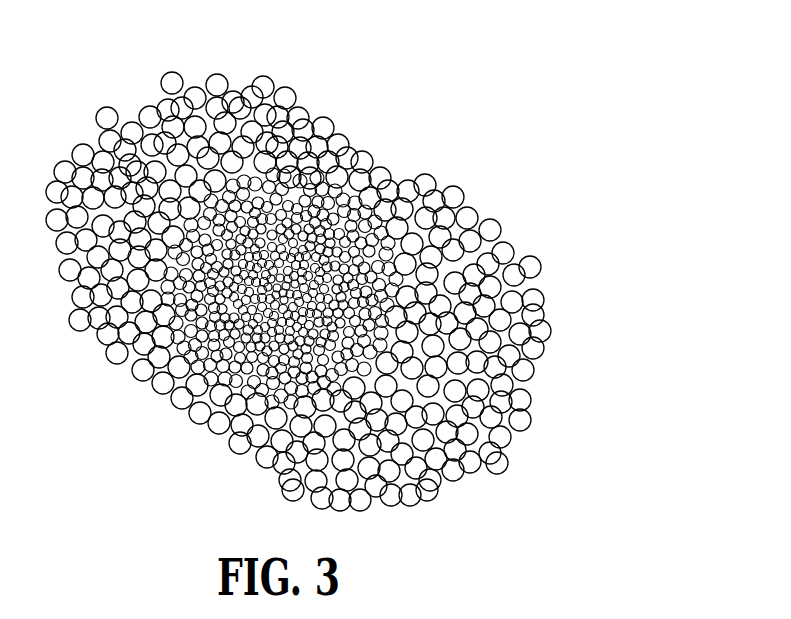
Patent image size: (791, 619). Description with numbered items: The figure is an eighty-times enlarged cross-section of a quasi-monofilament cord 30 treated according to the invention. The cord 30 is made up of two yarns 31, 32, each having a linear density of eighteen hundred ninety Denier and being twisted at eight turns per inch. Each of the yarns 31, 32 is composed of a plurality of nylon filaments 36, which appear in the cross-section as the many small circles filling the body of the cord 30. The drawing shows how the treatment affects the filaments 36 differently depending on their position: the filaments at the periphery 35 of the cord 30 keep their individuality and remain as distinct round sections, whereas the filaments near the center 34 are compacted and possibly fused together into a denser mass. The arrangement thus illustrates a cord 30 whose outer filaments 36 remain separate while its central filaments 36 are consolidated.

The cord 30 is at (376, 291).
The yarn 31 is at (359, 74).
The yarn 32 is at (527, 175).
The center 34 is at (229, 330).
The periphery 35 is at (68, 122).
The nylon filaments 36 is at (511, 463).